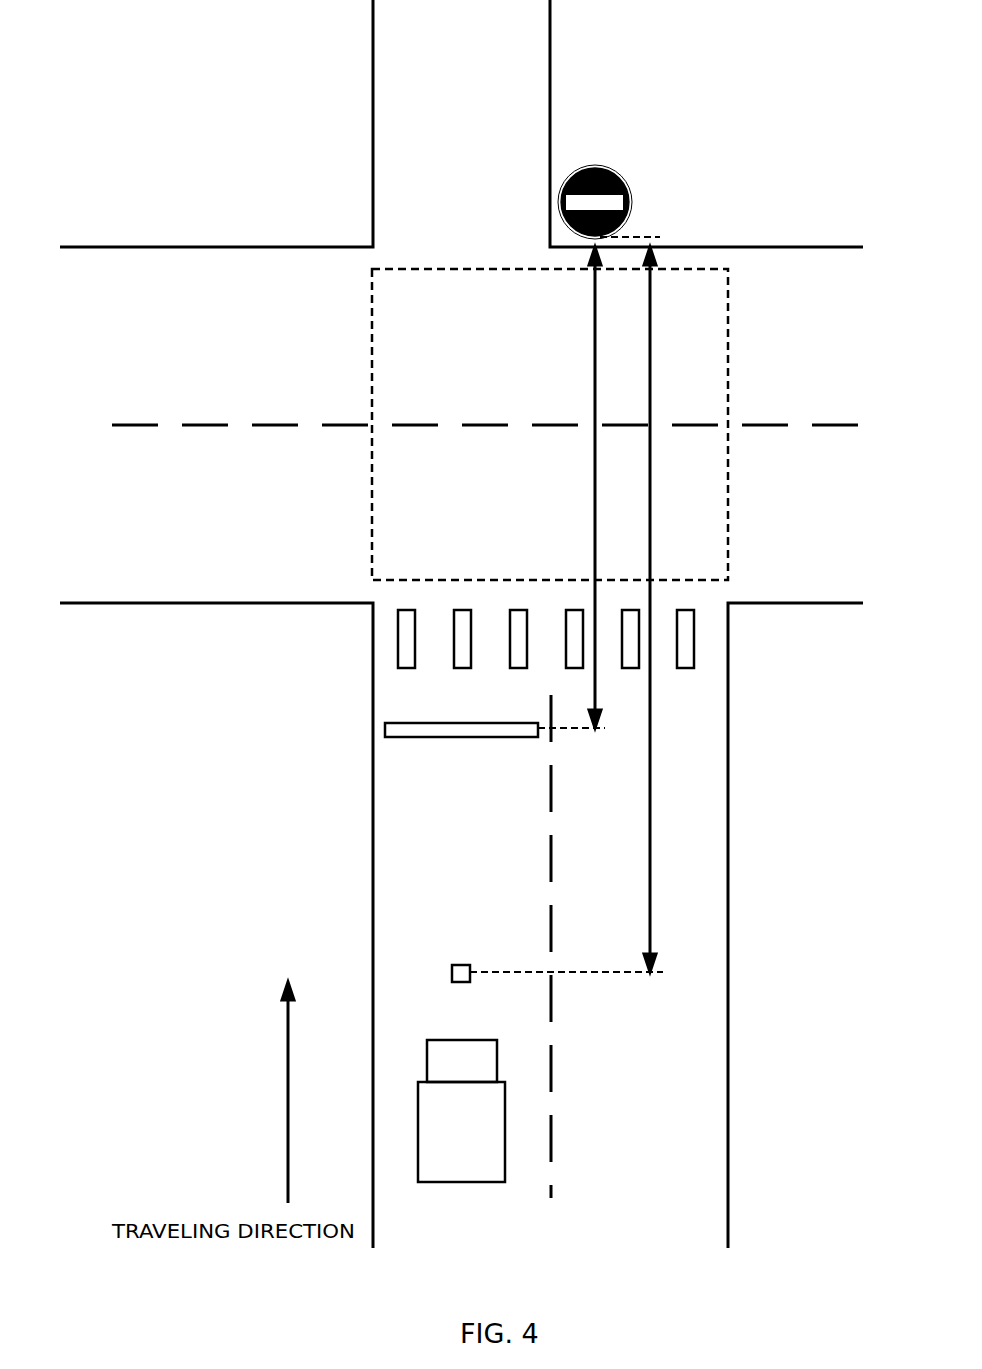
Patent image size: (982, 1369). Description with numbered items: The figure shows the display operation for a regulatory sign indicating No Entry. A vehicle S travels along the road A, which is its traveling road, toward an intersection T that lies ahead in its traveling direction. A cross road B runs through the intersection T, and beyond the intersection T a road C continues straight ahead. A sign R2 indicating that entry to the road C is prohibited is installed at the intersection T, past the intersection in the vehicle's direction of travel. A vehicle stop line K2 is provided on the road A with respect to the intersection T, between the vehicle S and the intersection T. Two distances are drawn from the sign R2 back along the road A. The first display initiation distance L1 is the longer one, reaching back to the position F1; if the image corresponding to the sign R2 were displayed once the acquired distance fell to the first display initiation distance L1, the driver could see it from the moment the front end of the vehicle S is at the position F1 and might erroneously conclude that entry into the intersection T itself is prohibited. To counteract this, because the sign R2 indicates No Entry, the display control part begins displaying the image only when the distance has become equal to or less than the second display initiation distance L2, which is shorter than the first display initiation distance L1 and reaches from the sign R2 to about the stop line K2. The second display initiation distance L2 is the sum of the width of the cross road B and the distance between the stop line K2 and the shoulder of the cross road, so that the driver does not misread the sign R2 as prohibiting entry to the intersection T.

The sign R2 is at (612, 170).
The vehicle stop line K2 is at (500, 723).
The position F1 is at (462, 965).
The vehicle S is at (470, 1040).
The intersection T is at (372, 527).
The first display initiation distance L1 is at (668, 609).
The second display initiation distance L2 is at (581, 487).
The road A is at (551, 972).
The crossing road B is at (466, 425).
The road C is at (457, 13).